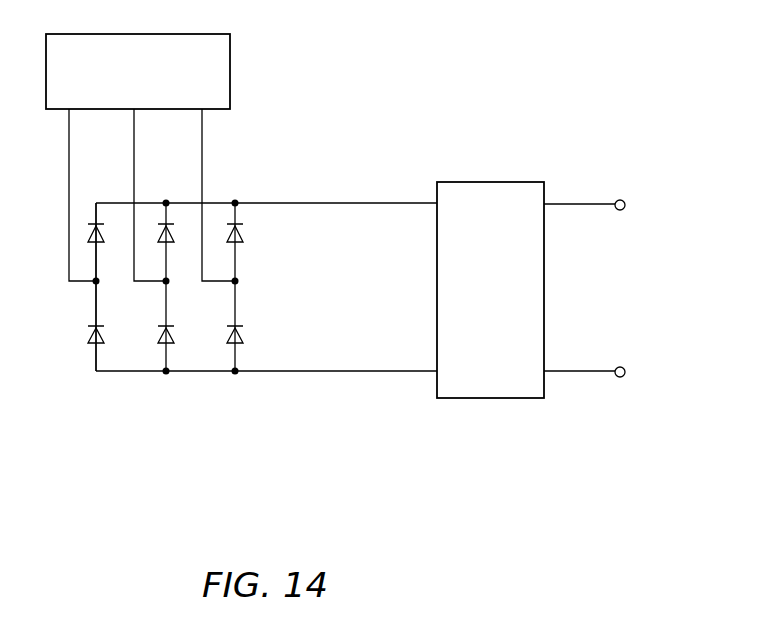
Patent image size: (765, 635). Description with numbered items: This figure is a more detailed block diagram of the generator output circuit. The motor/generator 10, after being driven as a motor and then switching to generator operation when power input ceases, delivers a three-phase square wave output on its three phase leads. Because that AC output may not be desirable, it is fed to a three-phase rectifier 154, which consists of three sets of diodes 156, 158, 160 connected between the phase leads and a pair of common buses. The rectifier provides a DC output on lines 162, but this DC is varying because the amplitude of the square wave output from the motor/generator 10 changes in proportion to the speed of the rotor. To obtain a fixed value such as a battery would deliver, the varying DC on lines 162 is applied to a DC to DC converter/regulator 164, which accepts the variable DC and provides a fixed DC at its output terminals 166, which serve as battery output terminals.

The motor/generator 10 is at (212, 34).
The three-phase rectifier 154 is at (141, 305).
The set of diodes 156 is at (90, 294).
The set of diodes 158 is at (160, 294).
The set of diodes 160 is at (230, 294).
The line 162 is at (398, 203).
The DC to DC converter/regulator 164 is at (527, 182).
The output terminals 166 is at (619, 200).